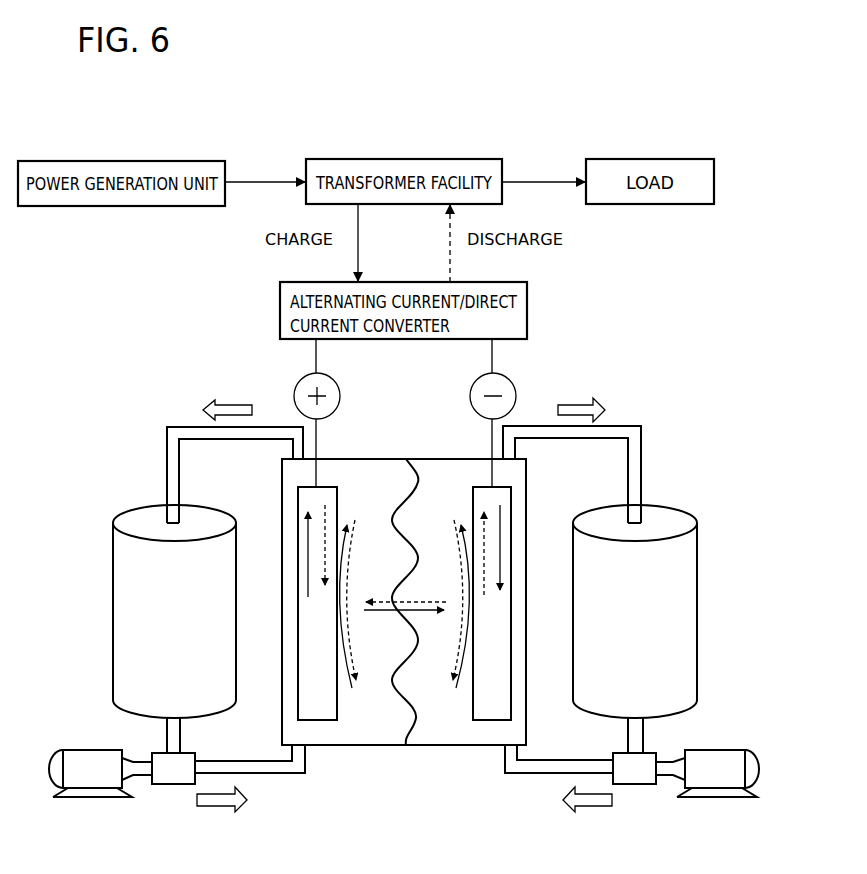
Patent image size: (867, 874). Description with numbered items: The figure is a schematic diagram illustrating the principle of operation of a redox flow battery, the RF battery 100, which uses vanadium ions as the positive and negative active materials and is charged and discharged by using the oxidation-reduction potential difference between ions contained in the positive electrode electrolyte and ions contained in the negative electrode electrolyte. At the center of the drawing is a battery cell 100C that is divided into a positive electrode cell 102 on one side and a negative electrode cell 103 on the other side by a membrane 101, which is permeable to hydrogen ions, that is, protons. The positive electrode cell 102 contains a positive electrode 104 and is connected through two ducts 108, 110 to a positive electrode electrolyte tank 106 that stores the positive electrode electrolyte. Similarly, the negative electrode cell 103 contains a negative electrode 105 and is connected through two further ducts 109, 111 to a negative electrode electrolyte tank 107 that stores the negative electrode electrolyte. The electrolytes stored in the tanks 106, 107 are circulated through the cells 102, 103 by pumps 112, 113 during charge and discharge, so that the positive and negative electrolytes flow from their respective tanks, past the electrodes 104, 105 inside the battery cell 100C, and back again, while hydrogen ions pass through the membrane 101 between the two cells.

The RF battery 100 is at (244, 358).
The battery cell 100C is at (368, 456).
The membrane 101 is at (415, 730).
The positive electrode cell 102 is at (345, 747).
The negative electrode cell 103 is at (463, 747).
The positive electrode 104 is at (298, 700).
The negative electrode 105 is at (512, 697).
The positive electrode electrolyte tank 106 is at (128, 515).
The negative electrode electrolyte tank 107 is at (680, 515).
The duct 108 is at (270, 775).
The duct 109 is at (540, 773).
The duct 110 is at (181, 426).
The duct 111 is at (628, 425).
The pump 112 is at (77, 750).
The pump 113 is at (735, 748).